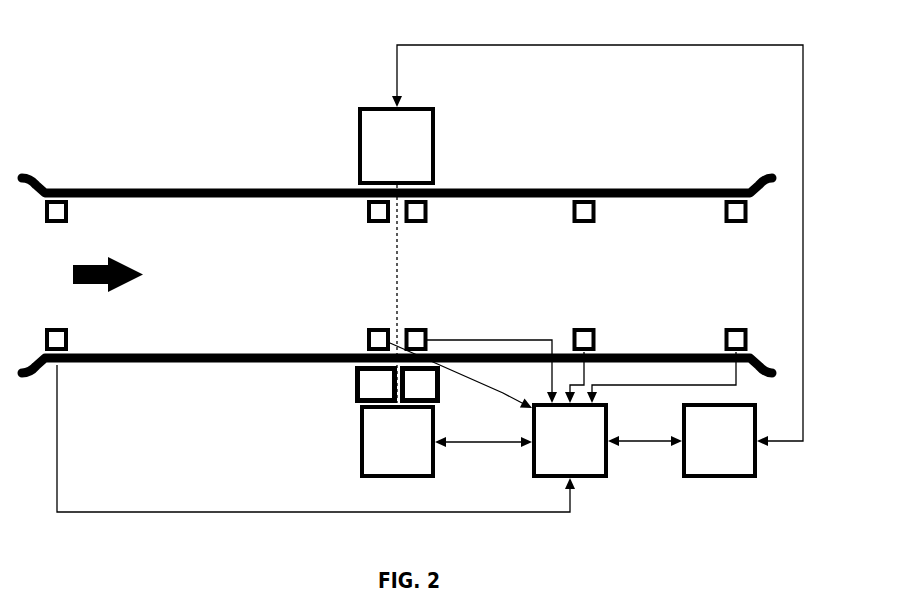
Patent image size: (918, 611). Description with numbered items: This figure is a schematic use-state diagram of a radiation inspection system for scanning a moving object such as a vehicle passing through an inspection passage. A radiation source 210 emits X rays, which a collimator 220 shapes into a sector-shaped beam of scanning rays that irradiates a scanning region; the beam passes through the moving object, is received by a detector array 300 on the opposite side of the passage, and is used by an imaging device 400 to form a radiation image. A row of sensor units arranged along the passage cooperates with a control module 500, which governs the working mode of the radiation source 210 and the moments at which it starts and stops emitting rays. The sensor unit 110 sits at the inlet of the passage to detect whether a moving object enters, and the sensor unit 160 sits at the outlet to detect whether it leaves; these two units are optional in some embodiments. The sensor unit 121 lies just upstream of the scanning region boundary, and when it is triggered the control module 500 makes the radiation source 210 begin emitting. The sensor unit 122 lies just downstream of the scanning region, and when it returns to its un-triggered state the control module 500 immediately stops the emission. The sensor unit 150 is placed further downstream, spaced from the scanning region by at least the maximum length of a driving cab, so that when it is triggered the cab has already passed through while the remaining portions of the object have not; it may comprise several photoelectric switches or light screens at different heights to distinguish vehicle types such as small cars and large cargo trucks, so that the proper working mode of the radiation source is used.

The sensor unit 110 is at (58, 328).
The sensor unit 121 is at (375, 330).
The sensor unit 122 is at (415, 328).
The sensor unit 150 is at (585, 329).
The sensor unit 160 is at (733, 328).
The radiation source 210 is at (360, 442).
The collimator 220 is at (355, 383).
The detector array 300 is at (435, 140).
The imaging device 400 is at (722, 477).
The control module 500 is at (608, 442).